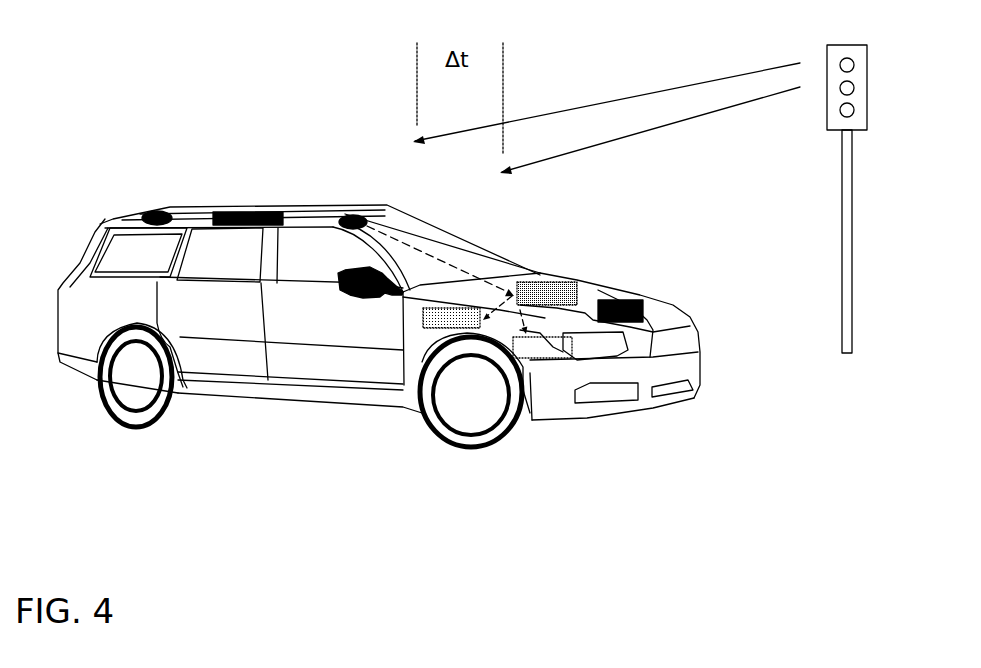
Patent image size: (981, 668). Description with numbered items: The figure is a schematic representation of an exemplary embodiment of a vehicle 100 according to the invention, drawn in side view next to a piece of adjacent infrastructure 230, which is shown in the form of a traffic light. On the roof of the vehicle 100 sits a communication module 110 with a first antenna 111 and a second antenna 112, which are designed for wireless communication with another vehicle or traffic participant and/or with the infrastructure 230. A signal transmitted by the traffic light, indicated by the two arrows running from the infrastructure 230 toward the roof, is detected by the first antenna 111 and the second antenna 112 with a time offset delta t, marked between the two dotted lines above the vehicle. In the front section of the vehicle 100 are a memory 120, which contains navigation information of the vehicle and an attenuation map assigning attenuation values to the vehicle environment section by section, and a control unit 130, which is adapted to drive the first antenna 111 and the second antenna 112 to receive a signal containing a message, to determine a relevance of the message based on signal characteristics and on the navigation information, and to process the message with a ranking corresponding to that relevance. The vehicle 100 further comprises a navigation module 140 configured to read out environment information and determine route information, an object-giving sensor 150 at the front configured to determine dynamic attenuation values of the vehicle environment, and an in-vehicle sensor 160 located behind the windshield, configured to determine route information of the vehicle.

The vehicle 100 is at (148, 183).
The communication module 110 is at (247, 208).
The first antenna 111 is at (160, 210).
The second antenna 112 is at (365, 215).
The memory 120 is at (562, 352).
The control unit 130 is at (533, 292).
The navigation module 140 is at (453, 308).
The object-giving sensor 150 is at (637, 301).
The in-vehicle sensor 160 is at (378, 276).
The infrastructure 230 is at (868, 78).